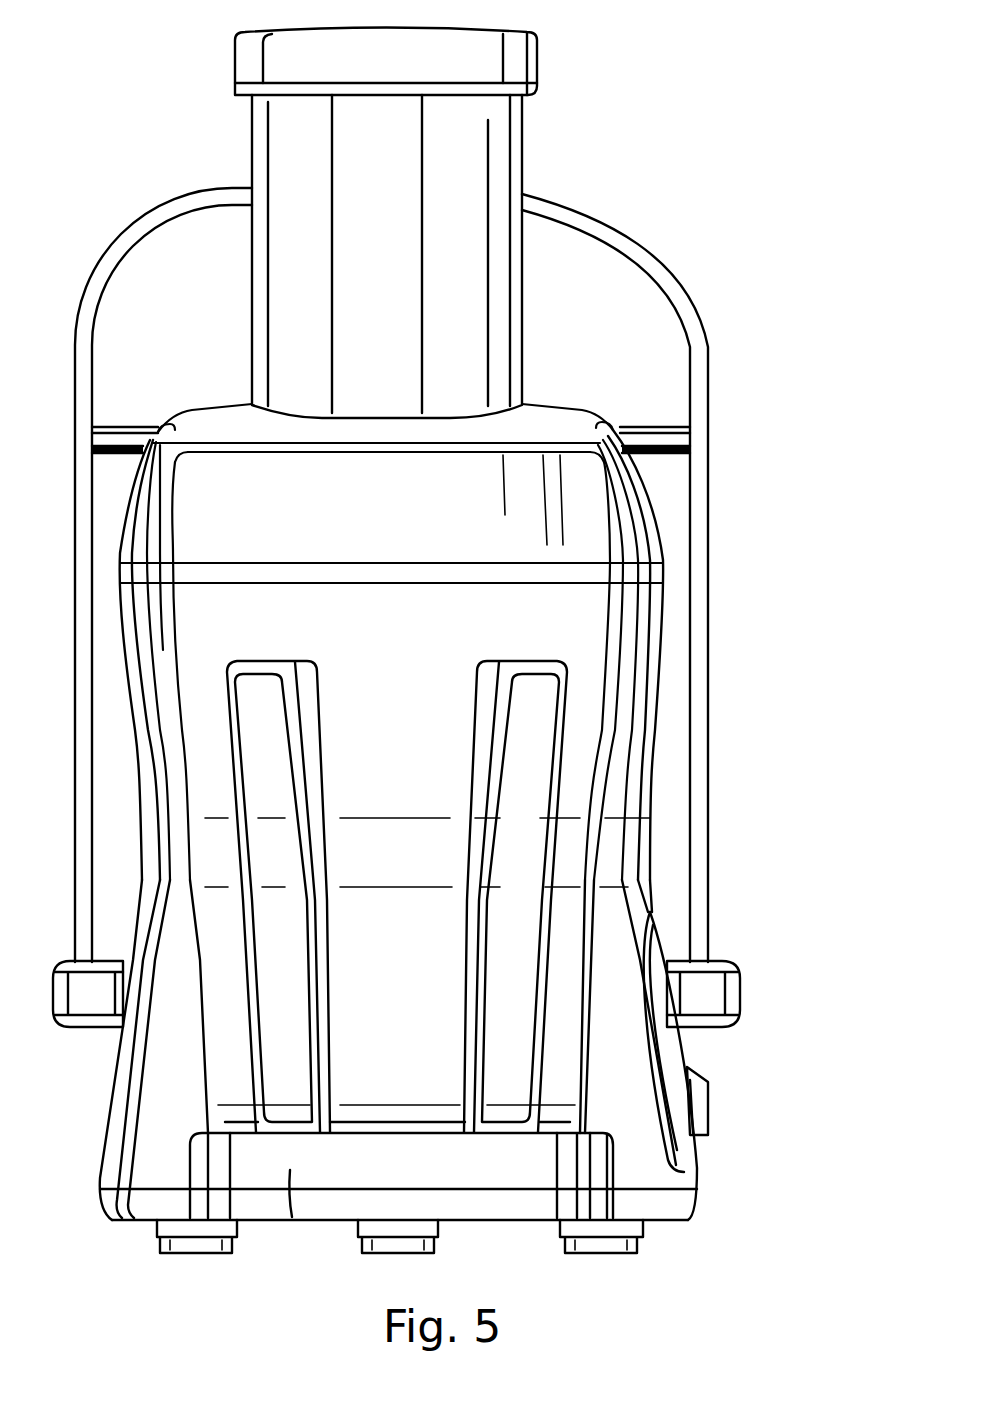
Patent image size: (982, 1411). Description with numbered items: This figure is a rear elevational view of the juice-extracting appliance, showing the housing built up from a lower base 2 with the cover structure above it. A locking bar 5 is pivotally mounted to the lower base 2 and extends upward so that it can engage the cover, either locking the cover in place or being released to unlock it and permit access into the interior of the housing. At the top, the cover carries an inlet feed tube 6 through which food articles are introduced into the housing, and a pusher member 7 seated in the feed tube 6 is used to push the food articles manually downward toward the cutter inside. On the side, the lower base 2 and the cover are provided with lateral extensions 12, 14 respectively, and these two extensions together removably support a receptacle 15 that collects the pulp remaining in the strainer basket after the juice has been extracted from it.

The lower base 2 is at (618, 1068).
The locking bar 5 is at (667, 270).
The inlet feed tube 6 is at (512, 152).
The pusher member 7 is at (537, 68).
The lateral extension 12 is at (697, 1207).
The lateral extension 14 is at (600, 525).
The receptacle 15 is at (620, 708).